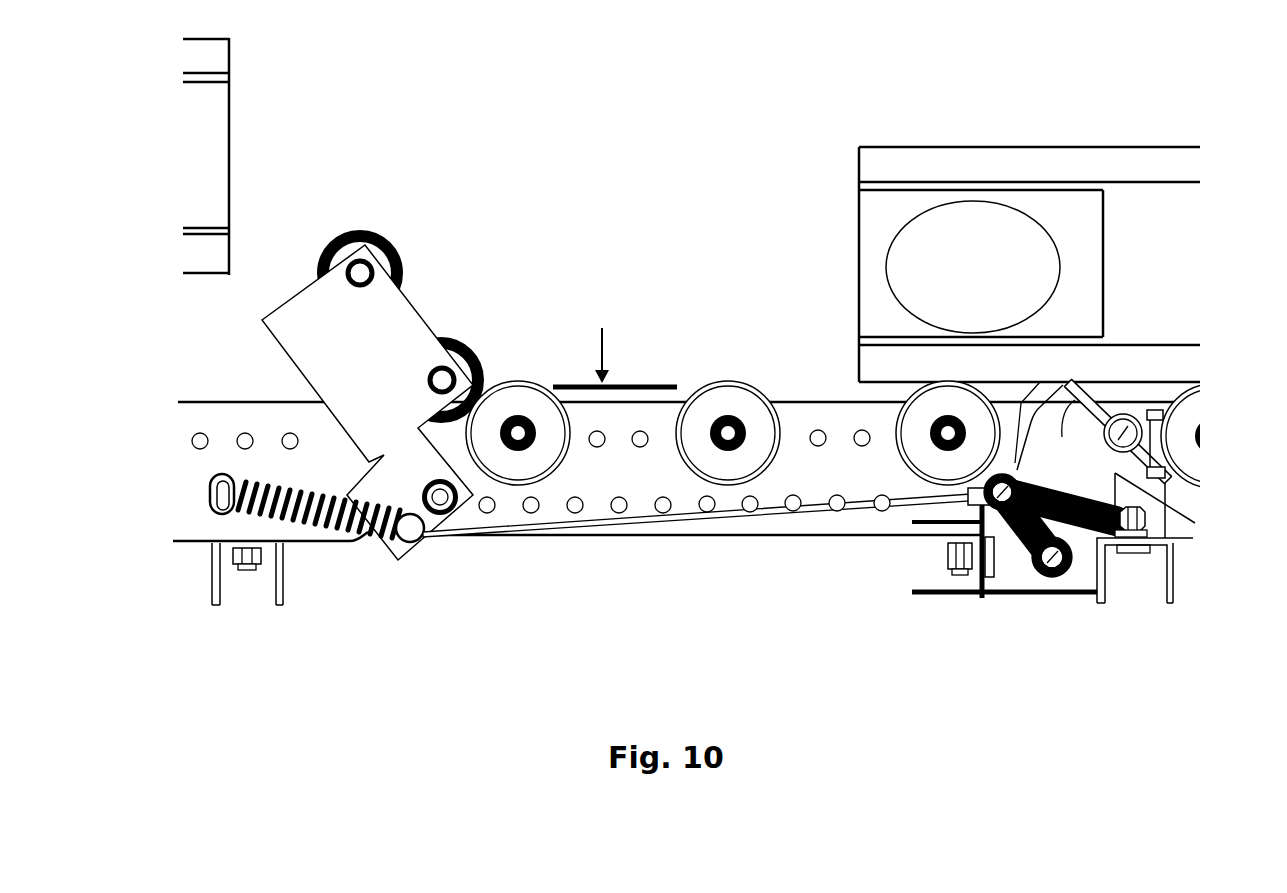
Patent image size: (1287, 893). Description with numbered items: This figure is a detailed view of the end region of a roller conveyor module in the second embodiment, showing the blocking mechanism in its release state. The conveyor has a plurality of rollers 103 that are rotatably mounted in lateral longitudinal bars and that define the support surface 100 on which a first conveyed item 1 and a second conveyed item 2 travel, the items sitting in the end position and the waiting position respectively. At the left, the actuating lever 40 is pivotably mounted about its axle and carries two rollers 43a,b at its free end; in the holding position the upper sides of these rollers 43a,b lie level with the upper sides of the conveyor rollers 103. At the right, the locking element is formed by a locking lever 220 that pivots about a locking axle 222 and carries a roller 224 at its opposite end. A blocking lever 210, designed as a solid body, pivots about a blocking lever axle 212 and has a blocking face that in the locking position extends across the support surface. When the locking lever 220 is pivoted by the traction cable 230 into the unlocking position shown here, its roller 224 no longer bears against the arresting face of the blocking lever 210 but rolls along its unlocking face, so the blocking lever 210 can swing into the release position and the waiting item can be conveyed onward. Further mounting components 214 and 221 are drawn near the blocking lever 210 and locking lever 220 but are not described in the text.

The first conveyed item 1 is at (207, 180).
The second conveyed item 2 is at (900, 203).
The actuating lever 40 is at (300, 338).
The rollers 43a,b is at (442, 338).
The support surface 100 is at (620, 384).
The rollers 103 is at (920, 432).
The blocking lever 210 is at (1063, 433).
The blocking lever axle 212 is at (1130, 432).
The support bracket 214 is at (1040, 382).
The locking lever 220 is at (1023, 580).
The holder bracket 221 is at (1103, 547).
The locking axle 222 is at (1050, 562).
The roller 224 is at (998, 497).
The traction cable 230 is at (757, 512).